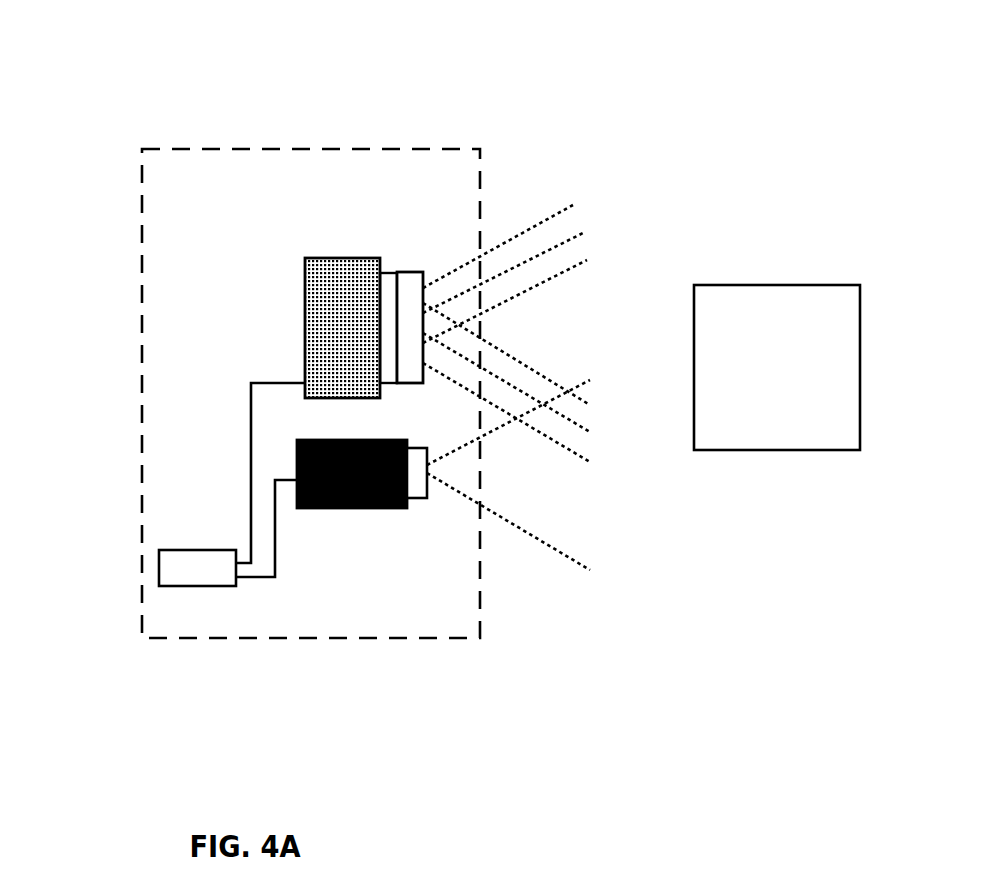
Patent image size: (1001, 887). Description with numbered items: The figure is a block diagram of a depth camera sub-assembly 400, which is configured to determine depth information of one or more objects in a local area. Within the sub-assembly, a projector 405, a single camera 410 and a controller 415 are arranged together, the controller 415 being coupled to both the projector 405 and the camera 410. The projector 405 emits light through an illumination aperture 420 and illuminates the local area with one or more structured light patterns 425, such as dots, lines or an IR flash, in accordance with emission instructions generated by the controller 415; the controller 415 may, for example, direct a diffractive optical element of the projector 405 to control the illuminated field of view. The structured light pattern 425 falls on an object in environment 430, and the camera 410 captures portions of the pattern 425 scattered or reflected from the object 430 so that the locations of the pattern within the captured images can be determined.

The depth camera sub-assembly 400 is at (177, 149).
The projector 405 is at (335, 258).
The camera 410 is at (353, 508).
The controller 415 is at (203, 586).
The illumination aperture 420 is at (412, 273).
The structured light pattern 425 is at (570, 227).
The object in environment 430 is at (708, 450).